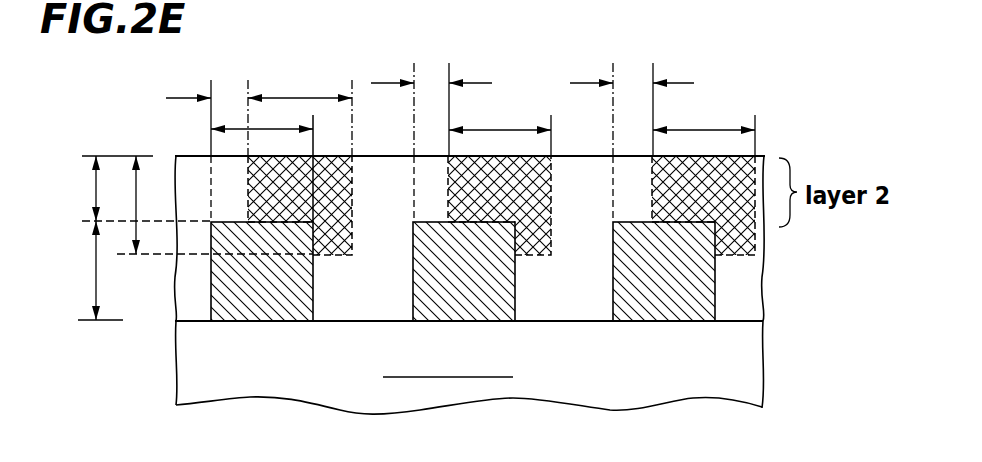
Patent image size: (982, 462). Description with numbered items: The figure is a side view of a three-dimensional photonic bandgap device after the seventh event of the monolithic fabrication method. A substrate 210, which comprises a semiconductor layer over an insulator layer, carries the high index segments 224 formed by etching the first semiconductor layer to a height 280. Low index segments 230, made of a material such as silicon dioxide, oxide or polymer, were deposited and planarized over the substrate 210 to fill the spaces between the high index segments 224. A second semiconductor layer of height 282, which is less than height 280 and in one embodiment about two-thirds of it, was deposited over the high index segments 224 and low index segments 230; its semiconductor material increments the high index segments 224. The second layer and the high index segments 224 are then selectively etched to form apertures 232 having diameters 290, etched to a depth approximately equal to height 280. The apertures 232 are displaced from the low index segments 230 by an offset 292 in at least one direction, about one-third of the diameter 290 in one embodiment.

The substrate 210 is at (192, 380).
The high index segments 224 is at (183, 275).
The low index segments 230 is at (281, 298).
The apertures 232 is at (297, 198).
The height 280 is at (96, 275).
The height 282 is at (96, 190).
The diameters 290 is at (292, 97).
The offset 292 is at (175, 97).